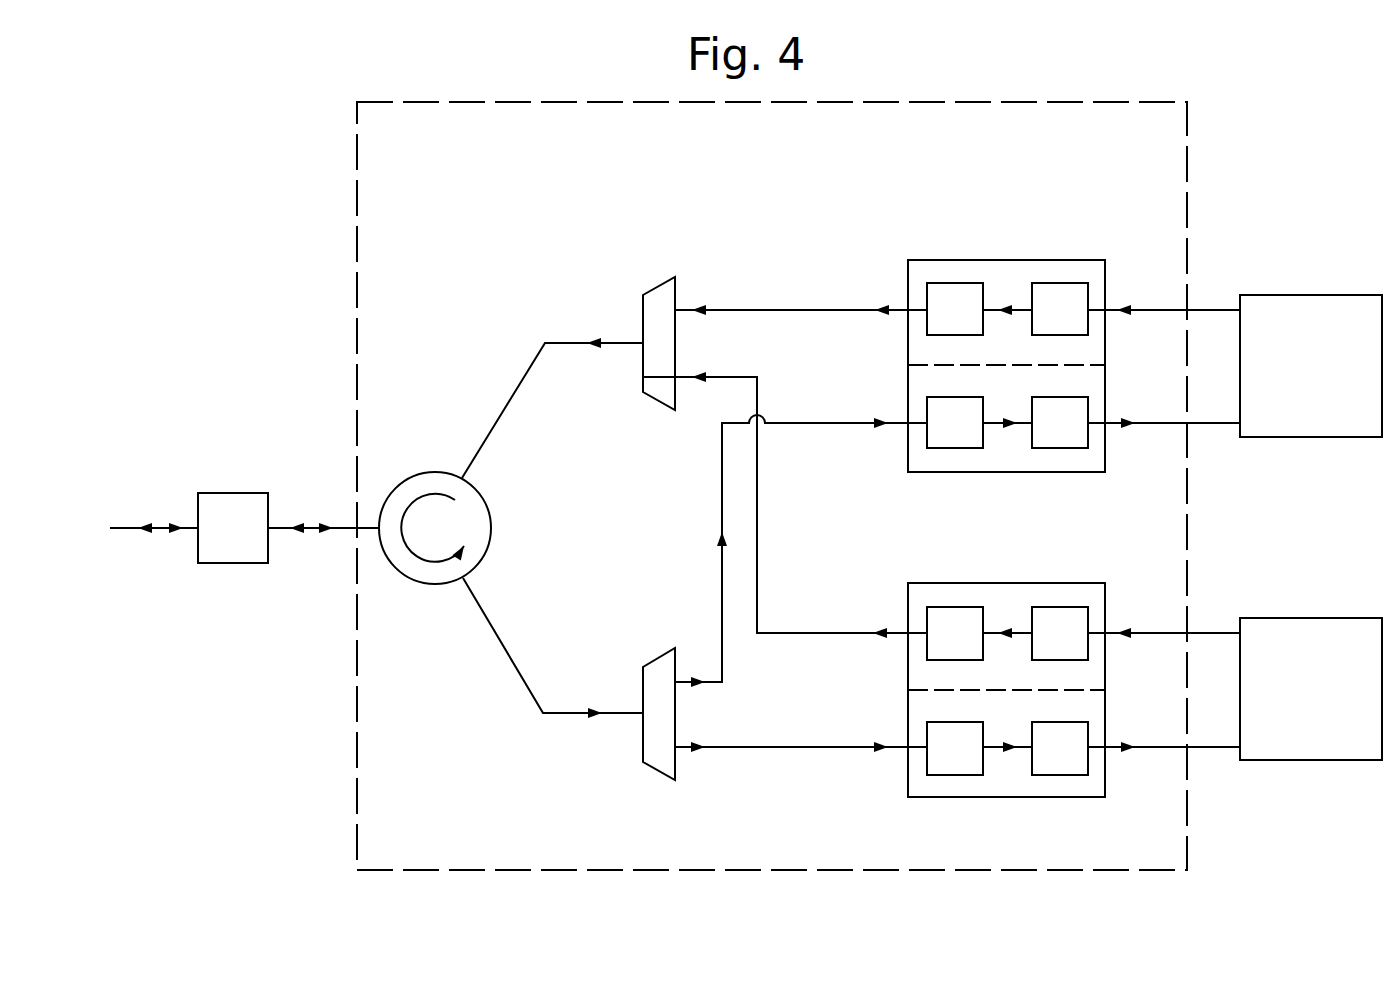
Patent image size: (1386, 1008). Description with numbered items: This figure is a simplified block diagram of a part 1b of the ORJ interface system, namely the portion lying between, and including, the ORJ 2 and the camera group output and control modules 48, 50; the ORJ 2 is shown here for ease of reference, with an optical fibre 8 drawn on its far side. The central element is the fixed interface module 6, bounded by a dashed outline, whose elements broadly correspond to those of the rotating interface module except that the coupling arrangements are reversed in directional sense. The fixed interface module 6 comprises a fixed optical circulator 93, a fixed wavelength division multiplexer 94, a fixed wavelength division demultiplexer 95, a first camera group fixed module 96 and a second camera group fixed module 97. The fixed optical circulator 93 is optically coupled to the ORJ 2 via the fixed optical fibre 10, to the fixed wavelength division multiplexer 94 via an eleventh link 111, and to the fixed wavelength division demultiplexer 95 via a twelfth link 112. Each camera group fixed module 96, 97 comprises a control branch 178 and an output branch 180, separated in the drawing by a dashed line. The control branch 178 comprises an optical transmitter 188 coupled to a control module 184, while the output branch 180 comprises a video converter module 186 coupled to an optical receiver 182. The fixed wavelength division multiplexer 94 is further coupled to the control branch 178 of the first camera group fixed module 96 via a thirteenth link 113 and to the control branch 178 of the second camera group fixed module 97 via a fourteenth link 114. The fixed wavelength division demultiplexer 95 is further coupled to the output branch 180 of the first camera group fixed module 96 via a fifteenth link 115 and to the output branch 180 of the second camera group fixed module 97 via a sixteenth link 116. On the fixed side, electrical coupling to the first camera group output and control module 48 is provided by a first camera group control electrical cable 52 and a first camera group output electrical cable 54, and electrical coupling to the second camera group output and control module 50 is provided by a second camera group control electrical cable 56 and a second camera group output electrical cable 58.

The part of the ORJ interface system 1b is at (1290, 170).
The ORJ 2 is at (242, 543).
The fixed interface module 6 is at (357, 232).
The bidirectional optical fiber input 8 is at (127, 528).
The fixed optical fibre 10 is at (312, 535).
The first camera group output and control module 48 is at (1327, 379).
The second camera group output and control module 50 is at (1327, 703).
The first camera group control electrical cable 52 is at (1215, 310).
The first camera group output electrical cable 54 is at (1217, 437).
The second camera group control electrical cable 56 is at (1218, 633).
The second camera group output electrical cable 58 is at (1218, 747).
The fixed optical circulator 93 is at (478, 510).
The fixed wavelength division multiplexer 94 is at (660, 303).
The fixed wavelength division demultiplexer 95 is at (660, 673).
The first camera group fixed module 96 is at (1030, 260).
The second camera group fixed module 97 is at (1030, 583).
The eleventh link 111 is at (502, 410).
The twelfth link 112 is at (500, 645).
The thirteenth link 113 is at (779, 310).
The fourteenth link 114 is at (757, 530).
The fifteenth link 115 is at (720, 503).
The sixteenth link 116 is at (757, 755).
The control branch 178 is at (922, 340).
The output branch 180 is at (922, 380).
The optical receiver 182 is at (978, 439).
The control module 184 is at (1083, 325).
The video converter module 186 is at (1083, 439).
The optical transmitter 188 is at (978, 325).